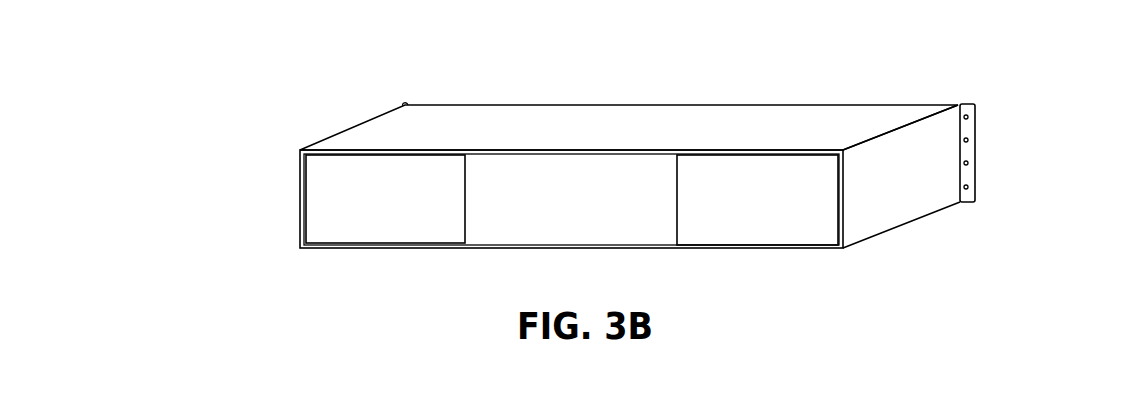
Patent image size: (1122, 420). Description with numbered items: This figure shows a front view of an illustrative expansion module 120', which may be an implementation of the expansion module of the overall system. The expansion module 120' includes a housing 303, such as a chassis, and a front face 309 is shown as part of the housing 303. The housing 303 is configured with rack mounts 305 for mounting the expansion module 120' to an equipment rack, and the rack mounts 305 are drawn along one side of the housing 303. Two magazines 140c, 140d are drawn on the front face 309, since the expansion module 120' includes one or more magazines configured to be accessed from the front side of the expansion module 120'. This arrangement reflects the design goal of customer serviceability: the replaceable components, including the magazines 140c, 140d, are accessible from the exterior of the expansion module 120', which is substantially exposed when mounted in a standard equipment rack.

The expansion module 120' is at (669, 136).
The housing 303 is at (384, 116).
The front face 309 is at (610, 178).
The magazine 140c is at (385, 199).
The magazine 140d is at (757, 200).
The rack mounts 305 is at (975, 188).